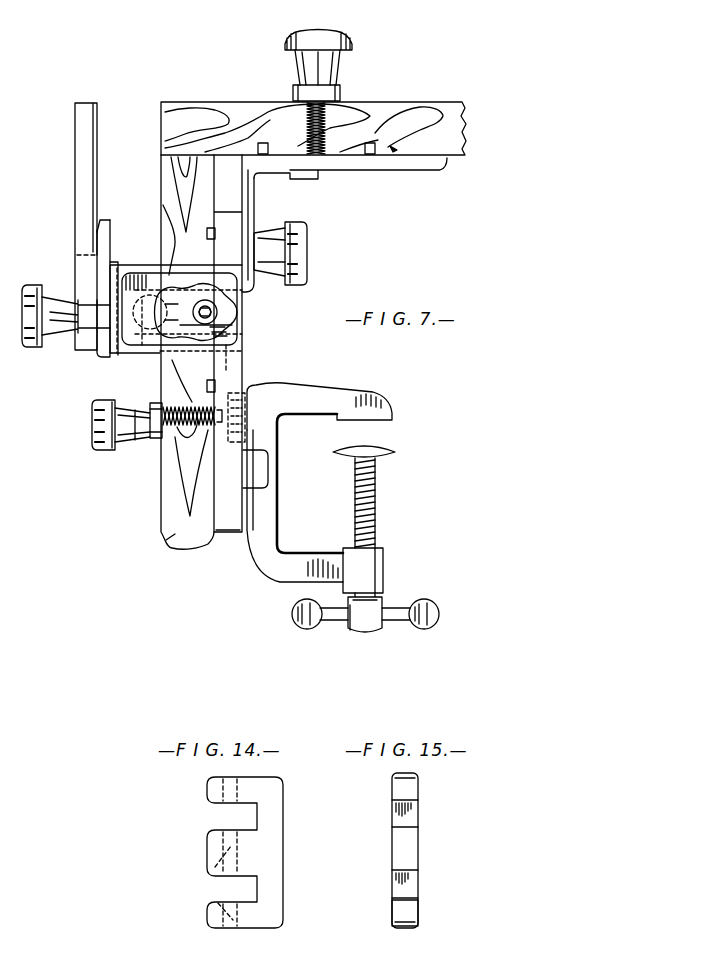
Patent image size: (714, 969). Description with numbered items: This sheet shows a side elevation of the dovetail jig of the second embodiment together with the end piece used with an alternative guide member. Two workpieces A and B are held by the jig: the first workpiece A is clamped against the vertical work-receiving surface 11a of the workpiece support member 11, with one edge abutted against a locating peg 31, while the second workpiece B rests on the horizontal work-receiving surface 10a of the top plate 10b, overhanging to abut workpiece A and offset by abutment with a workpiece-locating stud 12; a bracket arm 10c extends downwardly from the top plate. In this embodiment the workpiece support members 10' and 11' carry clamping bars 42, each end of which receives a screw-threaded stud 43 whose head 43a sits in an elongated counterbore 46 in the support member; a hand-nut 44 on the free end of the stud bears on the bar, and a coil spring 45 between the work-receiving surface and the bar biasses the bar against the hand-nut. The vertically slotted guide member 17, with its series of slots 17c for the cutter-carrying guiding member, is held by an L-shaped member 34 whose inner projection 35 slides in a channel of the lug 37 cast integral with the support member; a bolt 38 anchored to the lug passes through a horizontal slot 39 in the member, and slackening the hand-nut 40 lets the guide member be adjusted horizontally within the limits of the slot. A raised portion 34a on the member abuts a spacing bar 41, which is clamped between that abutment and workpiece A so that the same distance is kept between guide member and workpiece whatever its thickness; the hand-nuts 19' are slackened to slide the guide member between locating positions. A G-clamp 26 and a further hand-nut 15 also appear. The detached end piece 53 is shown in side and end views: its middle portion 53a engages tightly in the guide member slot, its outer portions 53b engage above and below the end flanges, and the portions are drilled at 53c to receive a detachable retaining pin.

In FIG. 7, the workpiece A is at (168, 180).
In FIG. 7, the workpiece B is at (208, 125).
In FIG. 7, the workpiece support member 10' is at (241, 179).
In FIG. 7, the work-receiving surface 10a is at (394, 147).
In FIG. 7, the top plate 10b is at (335, 163).
In FIG. 7, the bracket arm 10c is at (244, 281).
In FIG. 7, the workpiece support member 11 is at (228, 343).
In FIG. 7, the workpiece support member 11' is at (228, 542).
In FIG. 7, the work-receiving surface 11a is at (217, 362).
In FIG. 7, the workpiece-locating stud 12 is at (373, 142).
In FIG. 7, the clamping knob 15 is at (289, 234).
In FIG. 7, the guide member 17 is at (83, 178).
In FIG. 7, the slot 17c is at (98, 229).
In FIG. 7, the hand-nut 19' is at (59, 304).
In FIG. 7, the C-clamp 26 is at (283, 570).
In FIG. 7, the locating peg 31 is at (216, 233).
In FIG. 7, the L-shaped member 34 is at (104, 346).
In FIG. 7, the raised portion 34a is at (101, 263).
In FIG. 7, the projection 35 is at (145, 313).
In FIG. 7, the lug 37 is at (160, 331).
In FIG. 7, the bolt 38 is at (225, 308).
In FIG. 7, the horizontal slot 39 is at (170, 310).
In FIG. 7, the hand-nut 40 is at (221, 333).
In FIG. 7, the spacing bar 41 is at (140, 265).
In FIG. 7, the clamping bar 42 is at (302, 95).
In FIG. 7, the screw-threaded stud 43 is at (307, 128).
In FIG. 7, the head 43a is at (215, 415).
In FIG. 7, the hand-nut 44 is at (315, 44).
In FIG. 7, the coil spring 45 is at (182, 423).
In FIG. 7, the elongated counterbore 46 is at (238, 398).
In FIG. 14, the end piece 53 is at (268, 856).
In FIG. 14, the middle portion 53a is at (210, 856).
In FIG. 15, the middle portion 53a is at (408, 856).
In FIG. 14, the outer portion 53b is at (210, 787).
In FIG. 15, the outer portion 53b is at (408, 908).
In FIG. 14, the drilled hole 53c is at (214, 883).